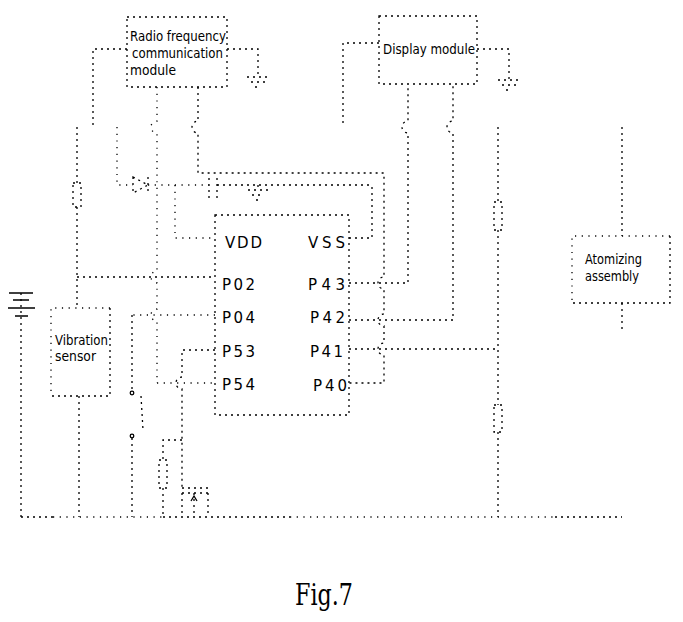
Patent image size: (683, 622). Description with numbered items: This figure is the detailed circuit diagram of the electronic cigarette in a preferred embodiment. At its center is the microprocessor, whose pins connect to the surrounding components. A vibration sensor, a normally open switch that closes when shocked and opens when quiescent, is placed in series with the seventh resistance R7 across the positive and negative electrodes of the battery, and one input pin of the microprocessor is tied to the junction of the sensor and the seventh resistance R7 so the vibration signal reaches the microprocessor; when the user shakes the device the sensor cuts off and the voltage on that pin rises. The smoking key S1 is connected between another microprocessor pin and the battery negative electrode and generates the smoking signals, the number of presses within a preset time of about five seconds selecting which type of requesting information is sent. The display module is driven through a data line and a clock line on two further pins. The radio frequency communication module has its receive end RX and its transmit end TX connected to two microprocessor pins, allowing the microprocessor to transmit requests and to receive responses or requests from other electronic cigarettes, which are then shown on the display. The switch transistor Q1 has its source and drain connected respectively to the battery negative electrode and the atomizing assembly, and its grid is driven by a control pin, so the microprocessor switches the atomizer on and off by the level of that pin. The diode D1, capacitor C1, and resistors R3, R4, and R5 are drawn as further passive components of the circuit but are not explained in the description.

The TX end of the radio frequency communication module TX is at (117, 96).
The RX end of the radio frequency communication module RX is at (186, 103).
The seventh resistance R7 is at (89, 217).
The diode D1 is at (163, 171).
The capacitor C1 is at (277, 193).
The smoking key S1 is at (172, 416).
The resistor R5 is at (158, 478).
The switch transistor Q1 is at (195, 496).
The resistor R4 is at (510, 266).
The resistor R3 is at (512, 461).